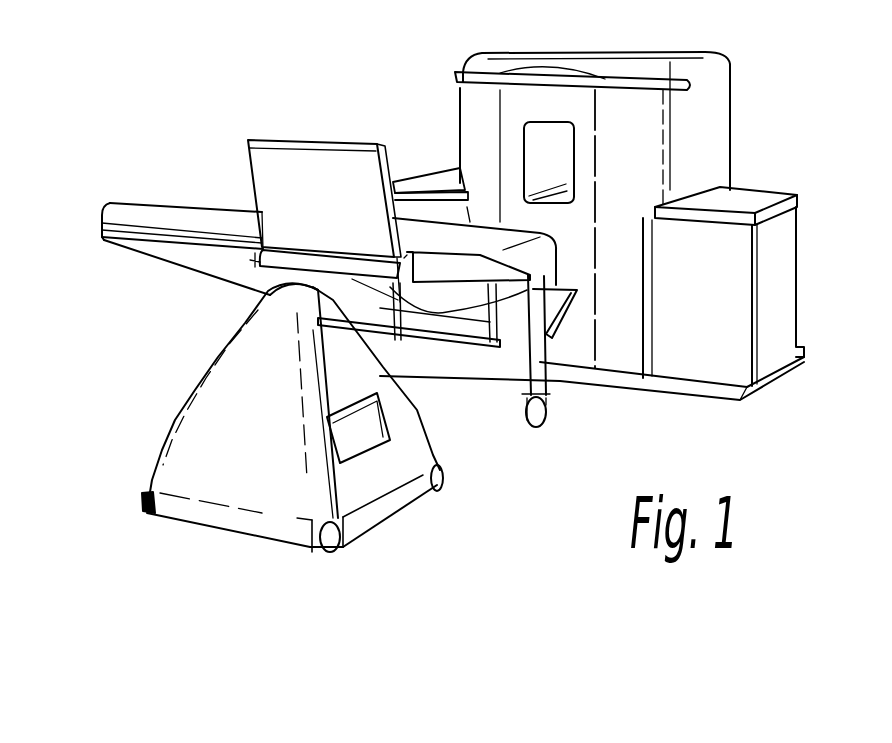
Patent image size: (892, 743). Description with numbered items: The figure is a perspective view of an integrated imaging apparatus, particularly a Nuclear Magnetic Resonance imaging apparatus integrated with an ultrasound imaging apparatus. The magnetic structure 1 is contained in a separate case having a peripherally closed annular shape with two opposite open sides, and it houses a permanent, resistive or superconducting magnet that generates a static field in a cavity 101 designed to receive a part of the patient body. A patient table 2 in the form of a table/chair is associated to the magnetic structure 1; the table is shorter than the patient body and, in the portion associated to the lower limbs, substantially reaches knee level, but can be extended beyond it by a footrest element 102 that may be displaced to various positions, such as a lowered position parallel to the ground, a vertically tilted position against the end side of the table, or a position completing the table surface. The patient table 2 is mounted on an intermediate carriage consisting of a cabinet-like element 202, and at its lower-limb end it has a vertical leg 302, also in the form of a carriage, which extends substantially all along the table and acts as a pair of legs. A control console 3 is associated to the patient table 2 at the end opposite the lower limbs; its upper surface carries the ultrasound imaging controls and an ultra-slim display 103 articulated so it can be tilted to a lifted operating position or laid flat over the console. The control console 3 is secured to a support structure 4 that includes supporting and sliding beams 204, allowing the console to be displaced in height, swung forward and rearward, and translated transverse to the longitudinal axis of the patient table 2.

The magnetic structure 1 is at (595, 225).
The patient table 2 is at (177, 203).
The control console 3 is at (402, 202).
The support structure 4 is at (437, 344).
The cavity 101 is at (552, 147).
The footrest element 102 is at (572, 300).
The ultra-slim display 103 is at (353, 167).
The cabinet-like element 202 is at (268, 520).
The supporting and sliding beams 204 is at (463, 338).
The vertical leg 302 is at (547, 274).